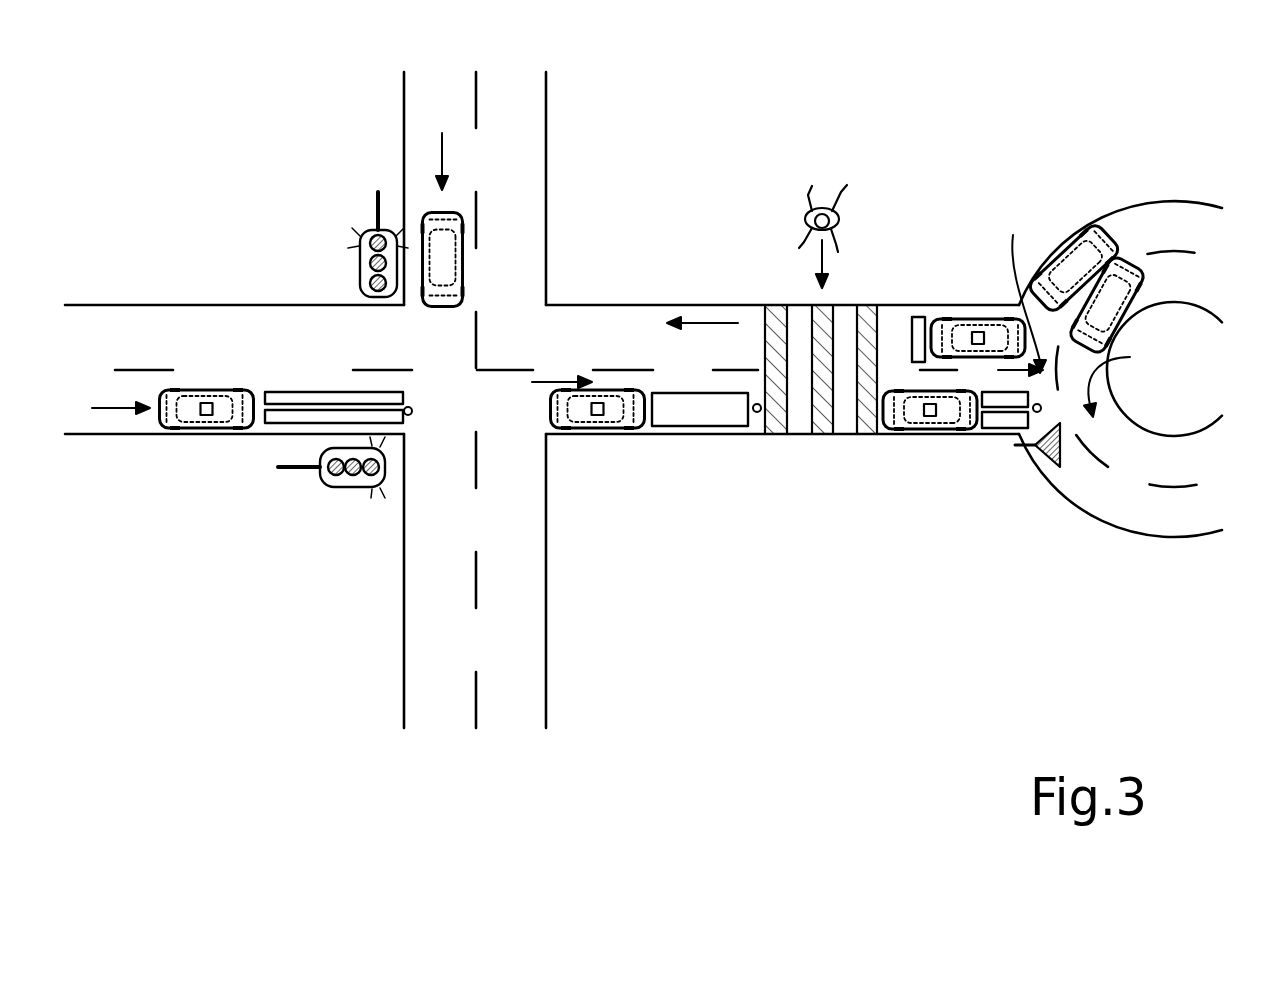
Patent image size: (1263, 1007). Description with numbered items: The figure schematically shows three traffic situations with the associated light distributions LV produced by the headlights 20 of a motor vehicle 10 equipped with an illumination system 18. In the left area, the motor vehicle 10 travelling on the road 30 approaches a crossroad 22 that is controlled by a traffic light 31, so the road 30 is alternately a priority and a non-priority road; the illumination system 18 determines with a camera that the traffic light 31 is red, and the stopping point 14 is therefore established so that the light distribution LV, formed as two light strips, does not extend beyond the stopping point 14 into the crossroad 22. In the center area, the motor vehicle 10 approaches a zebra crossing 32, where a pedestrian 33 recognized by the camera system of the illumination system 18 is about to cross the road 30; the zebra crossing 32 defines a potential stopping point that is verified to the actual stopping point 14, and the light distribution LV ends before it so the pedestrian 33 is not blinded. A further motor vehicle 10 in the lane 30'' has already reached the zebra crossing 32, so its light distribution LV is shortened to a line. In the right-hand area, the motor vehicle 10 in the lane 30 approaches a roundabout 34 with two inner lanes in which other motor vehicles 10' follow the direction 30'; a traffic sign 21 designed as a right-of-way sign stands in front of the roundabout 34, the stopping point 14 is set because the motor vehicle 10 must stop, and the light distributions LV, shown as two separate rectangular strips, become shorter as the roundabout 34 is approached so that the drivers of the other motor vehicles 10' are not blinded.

The motor vehicle 10 is at (593, 368).
The other motor vehicle 10' is at (829, 260).
The stopping point 14 is at (412, 412).
The illumination system 18 is at (207, 402).
The headlights 20 is at (253, 402).
The traffic sign 21 is at (1034, 447).
The crossroad 22 is at (589, 241).
The road 30 is at (342, 365).
The direction 30' is at (802, 274).
The lane 30'' is at (706, 294).
The traffic light 31 is at (360, 258).
The zebra crossing 32 is at (765, 440).
The pedestrian 33 is at (845, 206).
The roundabout 34 is at (1099, 189).
The light distribution LV is at (289, 417).